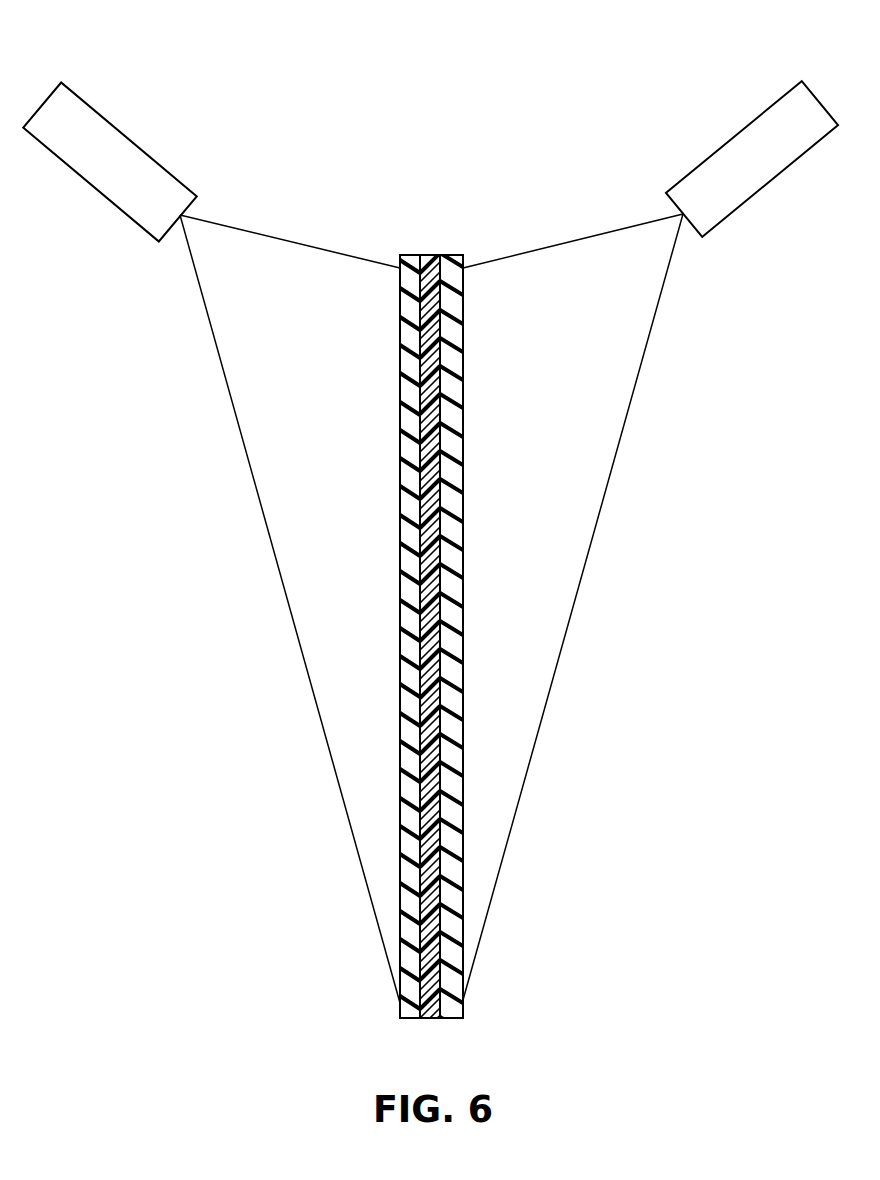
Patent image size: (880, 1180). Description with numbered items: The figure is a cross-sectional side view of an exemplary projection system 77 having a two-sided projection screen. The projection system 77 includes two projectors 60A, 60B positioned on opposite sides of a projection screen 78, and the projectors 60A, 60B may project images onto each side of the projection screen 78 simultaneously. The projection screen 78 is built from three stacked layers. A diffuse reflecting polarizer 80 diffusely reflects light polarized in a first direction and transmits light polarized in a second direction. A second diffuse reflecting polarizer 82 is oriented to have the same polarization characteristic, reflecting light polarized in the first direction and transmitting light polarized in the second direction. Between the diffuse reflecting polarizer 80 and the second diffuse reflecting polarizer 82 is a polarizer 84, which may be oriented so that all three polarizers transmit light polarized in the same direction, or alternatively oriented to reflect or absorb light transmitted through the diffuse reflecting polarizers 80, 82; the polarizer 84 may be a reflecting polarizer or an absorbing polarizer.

The projection system 77 is at (321, 68).
The projector 60A is at (107, 123).
The projector 60B is at (758, 118).
The projection screen 78 is at (400, 1024).
The diffuse reflecting polarizer 80 is at (408, 308).
The second diffuse reflecting polarizer 82 is at (453, 296).
The polarizer 84 is at (427, 258).